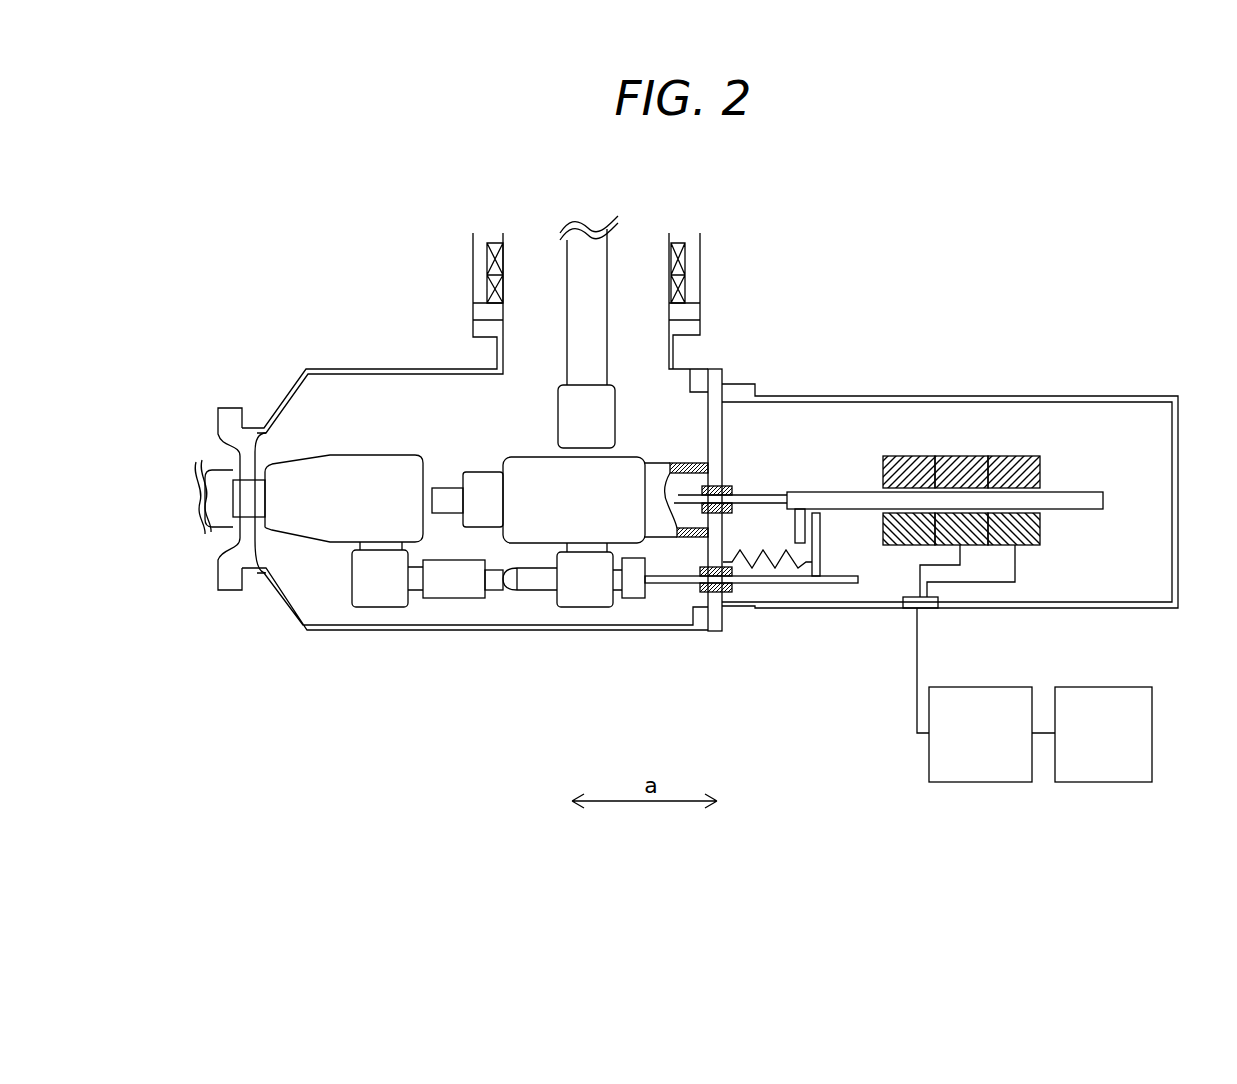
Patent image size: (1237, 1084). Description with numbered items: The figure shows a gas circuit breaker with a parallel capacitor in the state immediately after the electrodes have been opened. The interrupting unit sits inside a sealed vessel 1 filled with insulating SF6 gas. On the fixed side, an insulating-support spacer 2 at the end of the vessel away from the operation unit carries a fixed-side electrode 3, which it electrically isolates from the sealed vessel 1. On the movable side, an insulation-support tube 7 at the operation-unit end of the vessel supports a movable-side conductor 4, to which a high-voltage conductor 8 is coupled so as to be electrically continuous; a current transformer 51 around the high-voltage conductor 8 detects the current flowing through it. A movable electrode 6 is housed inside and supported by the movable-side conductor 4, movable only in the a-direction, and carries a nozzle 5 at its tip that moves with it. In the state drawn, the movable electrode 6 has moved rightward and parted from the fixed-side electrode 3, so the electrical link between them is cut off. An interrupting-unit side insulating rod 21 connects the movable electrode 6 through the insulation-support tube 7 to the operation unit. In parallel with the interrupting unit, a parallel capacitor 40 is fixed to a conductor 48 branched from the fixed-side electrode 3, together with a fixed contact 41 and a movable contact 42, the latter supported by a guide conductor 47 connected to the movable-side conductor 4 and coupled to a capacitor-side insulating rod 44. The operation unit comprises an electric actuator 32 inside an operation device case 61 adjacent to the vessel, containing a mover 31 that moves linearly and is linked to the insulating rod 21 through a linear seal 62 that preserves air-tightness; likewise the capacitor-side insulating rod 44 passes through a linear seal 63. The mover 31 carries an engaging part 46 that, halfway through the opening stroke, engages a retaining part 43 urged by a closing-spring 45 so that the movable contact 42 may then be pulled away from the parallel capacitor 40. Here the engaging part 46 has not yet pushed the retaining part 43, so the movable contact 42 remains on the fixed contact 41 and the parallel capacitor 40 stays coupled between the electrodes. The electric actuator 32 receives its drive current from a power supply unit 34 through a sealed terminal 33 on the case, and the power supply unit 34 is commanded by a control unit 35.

The sealed vessel 1 is at (280, 606).
The insulating-support spacer 2 is at (222, 425).
The fixed-side electrode 3 is at (314, 462).
The movable-side conductor 4 is at (520, 458).
The nozzle 5 is at (447, 489).
The movable electrode 6 is at (480, 473).
The insulation-support tube 7 is at (660, 468).
The high-voltage conductor 8 is at (571, 282).
The interrupting-unit side insulating rod 21 is at (685, 496).
The mover 31 is at (848, 496).
The electric actuator 32 is at (1040, 546).
The sealed terminal 33 is at (933, 609).
The power supply unit 34 is at (993, 783).
The control unit 35 is at (1112, 783).
The parallel capacitor 40 is at (452, 598).
The fixed contact 41 is at (495, 591).
The movable contact 42 is at (537, 591).
The retaining part 43 is at (815, 548).
The capacitor-side insulating rod 44 is at (850, 584).
The closing-spring 45 is at (757, 584).
The engaging part 46 is at (800, 522).
The guide conductor 47 is at (595, 608).
The conductor 48 is at (380, 608).
The current transformer 51 is at (682, 262).
The operation device case 61 is at (1117, 396).
The linear seal 62 is at (730, 487).
The linear seal 63 is at (728, 603).